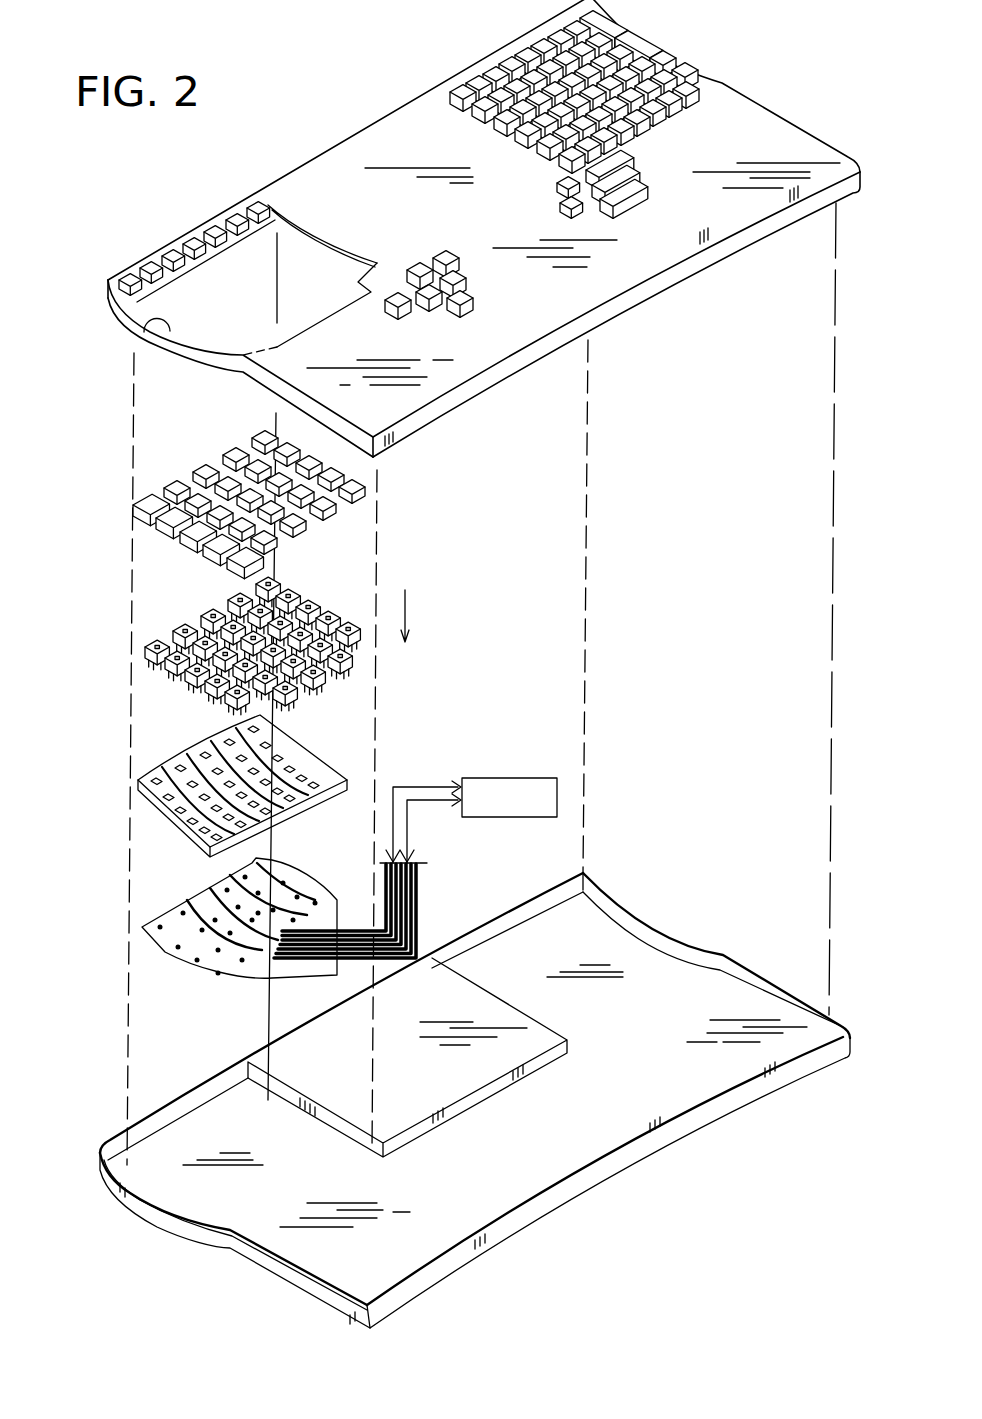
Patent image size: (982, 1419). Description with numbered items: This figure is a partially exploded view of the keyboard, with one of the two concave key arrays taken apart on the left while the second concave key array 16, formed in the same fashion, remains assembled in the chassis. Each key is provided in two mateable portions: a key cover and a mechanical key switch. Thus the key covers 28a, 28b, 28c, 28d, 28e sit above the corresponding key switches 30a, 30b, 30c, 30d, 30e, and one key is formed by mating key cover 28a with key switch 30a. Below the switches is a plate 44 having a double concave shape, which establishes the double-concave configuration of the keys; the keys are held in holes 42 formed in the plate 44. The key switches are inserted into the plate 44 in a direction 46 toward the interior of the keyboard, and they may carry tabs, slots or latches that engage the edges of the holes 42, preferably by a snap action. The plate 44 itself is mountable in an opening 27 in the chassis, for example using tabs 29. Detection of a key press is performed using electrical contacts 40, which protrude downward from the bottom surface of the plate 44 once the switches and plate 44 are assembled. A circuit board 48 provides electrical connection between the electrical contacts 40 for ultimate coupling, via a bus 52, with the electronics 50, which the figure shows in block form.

The second concave key array 16 is at (577, 0).
The opening 27 is at (146, 326).
The key cover 28a is at (162, 504).
The key cover 28b is at (188, 488).
The key cover 28c is at (215, 470).
The key cover 28d is at (240, 453).
The key cover 28e is at (266, 436).
The tabs 29 is at (217, 782).
The key switch 30a is at (158, 639).
The key switch 30b is at (188, 621).
The key switch 30c is at (215, 604).
The key switch 30d is at (243, 593).
The key switch 30e is at (272, 577).
The electrical contacts 40 is at (210, 638).
The holes 42 is at (183, 769).
The plate 44 is at (343, 771).
The direction 46 is at (410, 603).
The circuit board 48 is at (200, 967).
The electronics 50 is at (488, 778).
The bus 52 is at (422, 894).